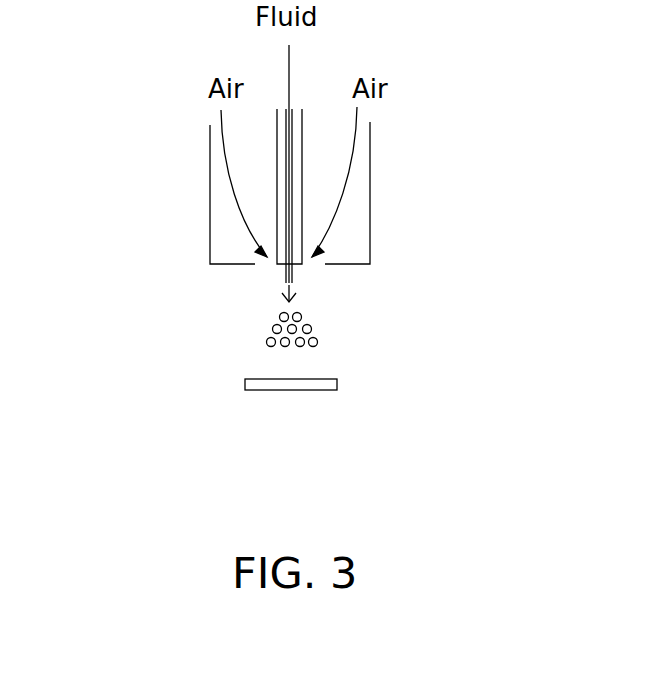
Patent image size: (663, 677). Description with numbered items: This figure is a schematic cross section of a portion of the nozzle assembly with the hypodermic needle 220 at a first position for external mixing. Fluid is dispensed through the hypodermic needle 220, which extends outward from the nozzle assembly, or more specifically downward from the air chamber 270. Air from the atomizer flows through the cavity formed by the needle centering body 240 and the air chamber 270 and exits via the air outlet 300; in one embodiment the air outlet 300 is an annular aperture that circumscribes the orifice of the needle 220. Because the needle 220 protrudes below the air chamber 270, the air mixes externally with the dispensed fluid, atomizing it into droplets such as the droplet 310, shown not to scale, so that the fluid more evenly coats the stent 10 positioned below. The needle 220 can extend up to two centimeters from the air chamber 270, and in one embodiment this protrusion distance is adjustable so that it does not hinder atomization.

The stent 10 is at (335, 390).
The hypodermic needle 220 is at (295, 272).
The needle centering body 240 is at (302, 148).
The air chamber 270 is at (370, 215).
The air outlet 300 is at (265, 270).
The droplet 310 is at (318, 342).